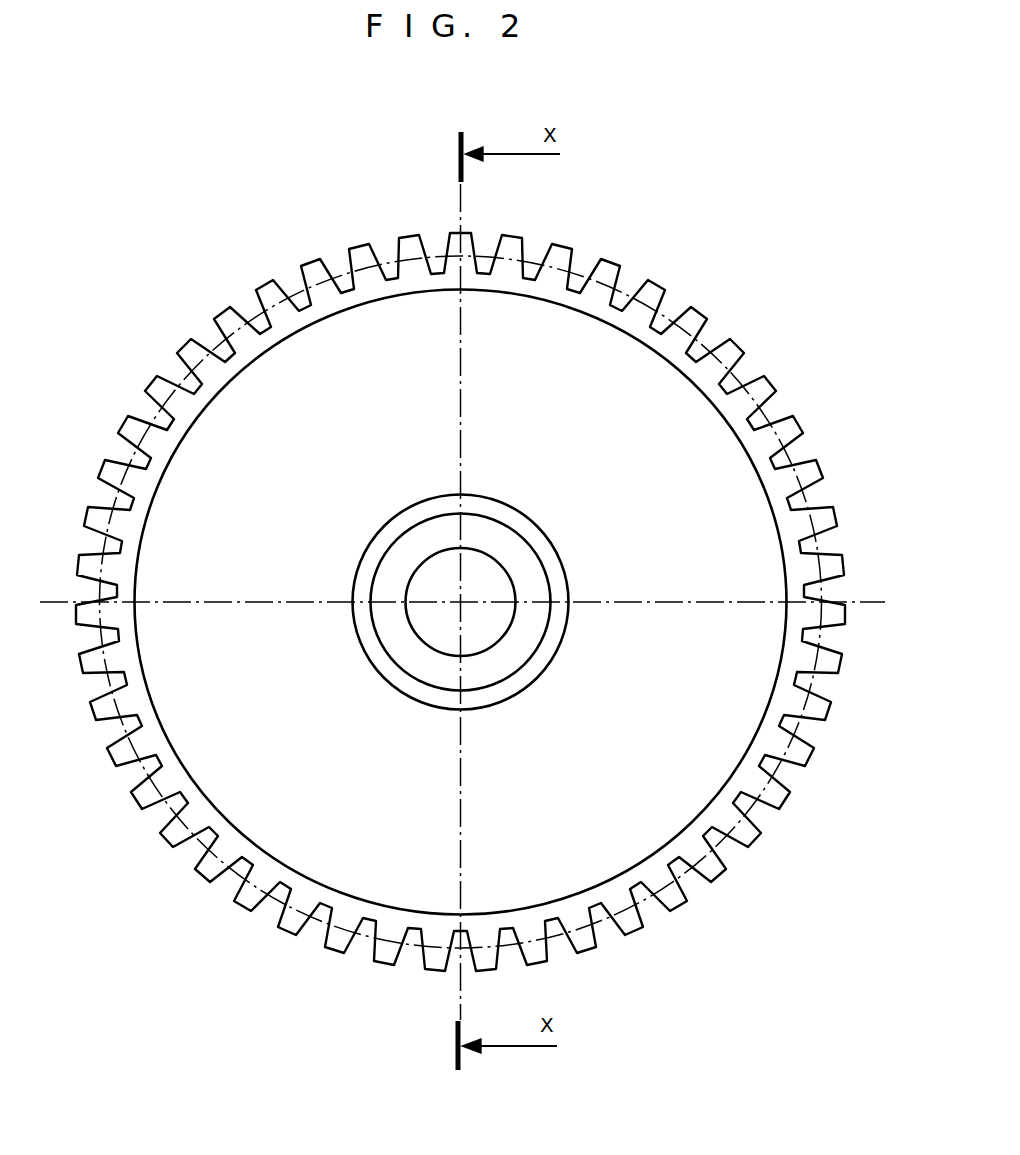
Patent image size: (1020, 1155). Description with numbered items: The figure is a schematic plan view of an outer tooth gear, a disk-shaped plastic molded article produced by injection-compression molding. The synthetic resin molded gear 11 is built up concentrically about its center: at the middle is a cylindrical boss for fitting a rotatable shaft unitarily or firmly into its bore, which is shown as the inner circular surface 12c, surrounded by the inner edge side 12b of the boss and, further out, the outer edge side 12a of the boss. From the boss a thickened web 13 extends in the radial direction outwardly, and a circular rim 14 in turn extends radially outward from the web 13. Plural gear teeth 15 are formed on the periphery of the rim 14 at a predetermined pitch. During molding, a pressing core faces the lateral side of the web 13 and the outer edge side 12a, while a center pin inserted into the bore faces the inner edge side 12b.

The synthetic resin molded gear 11 is at (472, 1117).
The outer edge side of the boss 12a is at (360, 613).
The inner edge side of the boss 12b is at (381, 634).
The inner circular surface of the boss 12c is at (447, 653).
The web 13 is at (642, 528).
The rim 14 is at (687, 358).
The gear teeth 15 is at (518, 247).